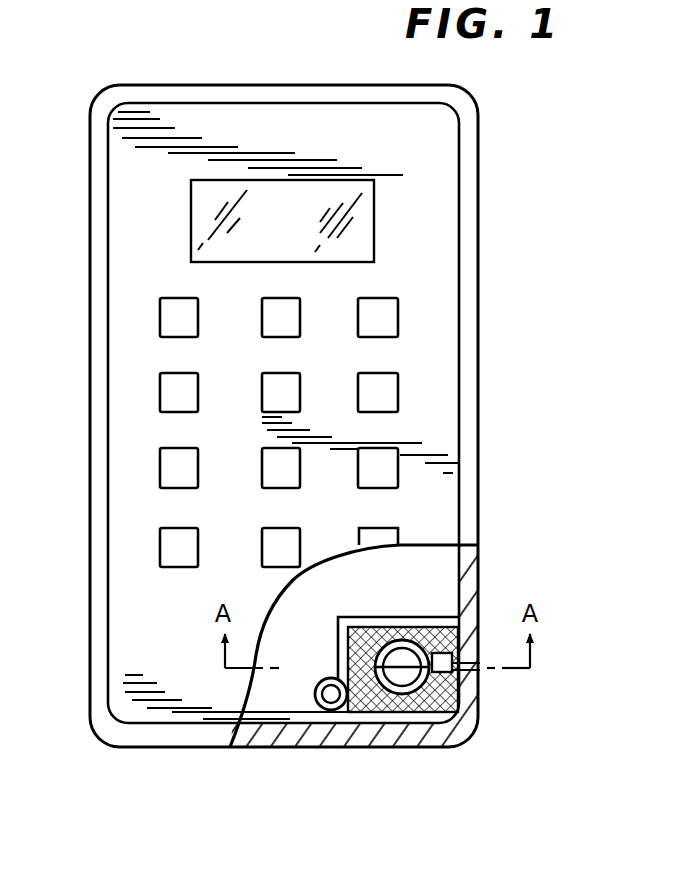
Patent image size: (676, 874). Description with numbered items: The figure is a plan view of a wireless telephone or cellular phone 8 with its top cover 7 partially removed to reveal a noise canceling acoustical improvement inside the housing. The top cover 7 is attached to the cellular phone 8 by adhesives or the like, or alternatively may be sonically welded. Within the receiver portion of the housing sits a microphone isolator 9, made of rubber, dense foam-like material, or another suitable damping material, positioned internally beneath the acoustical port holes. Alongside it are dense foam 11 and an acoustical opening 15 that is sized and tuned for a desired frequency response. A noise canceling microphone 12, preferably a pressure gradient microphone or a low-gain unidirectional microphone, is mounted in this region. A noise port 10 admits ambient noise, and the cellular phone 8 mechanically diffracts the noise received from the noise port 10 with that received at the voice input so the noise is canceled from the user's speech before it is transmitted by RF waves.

The top cover 7 is at (78, 392).
The cellular phone 8 is at (431, 372).
The microphone isolator 9 is at (458, 626).
The noise port 10 is at (474, 668).
The dense foam 11 is at (446, 672).
The noise canceling microphone 12 is at (404, 675).
The acoustical opening 15 is at (461, 697).